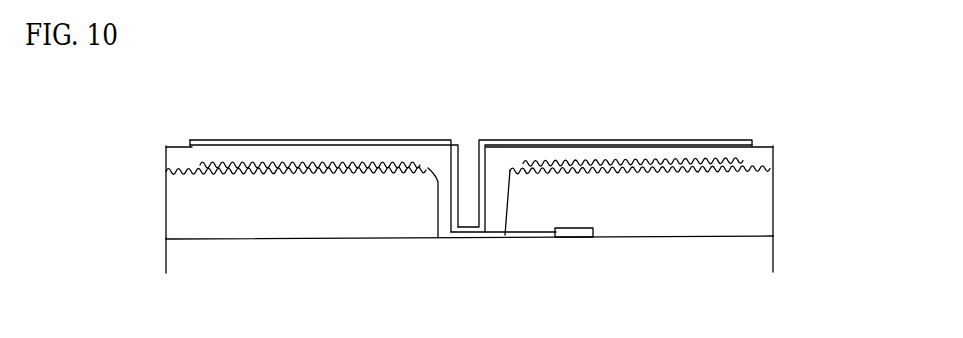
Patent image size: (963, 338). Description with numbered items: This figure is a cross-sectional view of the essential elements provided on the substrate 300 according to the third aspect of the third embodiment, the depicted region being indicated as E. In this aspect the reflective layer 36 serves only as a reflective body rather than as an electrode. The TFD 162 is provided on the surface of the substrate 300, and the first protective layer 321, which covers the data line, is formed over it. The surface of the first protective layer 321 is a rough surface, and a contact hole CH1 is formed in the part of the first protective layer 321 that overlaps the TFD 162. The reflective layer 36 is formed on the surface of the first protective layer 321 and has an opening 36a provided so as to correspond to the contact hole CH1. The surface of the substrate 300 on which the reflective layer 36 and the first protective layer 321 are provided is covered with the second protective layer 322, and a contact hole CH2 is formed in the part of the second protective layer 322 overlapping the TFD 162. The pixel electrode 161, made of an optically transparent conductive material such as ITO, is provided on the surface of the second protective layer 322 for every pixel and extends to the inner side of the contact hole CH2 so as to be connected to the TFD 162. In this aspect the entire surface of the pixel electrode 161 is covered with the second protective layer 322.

The pixel region E is at (174, 106).
The reflective layer 36 is at (323, 152).
The opening 36a is at (436, 203).
The contact hole CH1 is at (437, 180).
The contact hole CH2 is at (481, 163).
The pixel electrode 161 is at (632, 140).
The TFD 162 is at (573, 238).
The substrate 300 is at (772, 252).
The first protective layer 321 is at (772, 203).
The second protective layer 322 is at (772, 154).